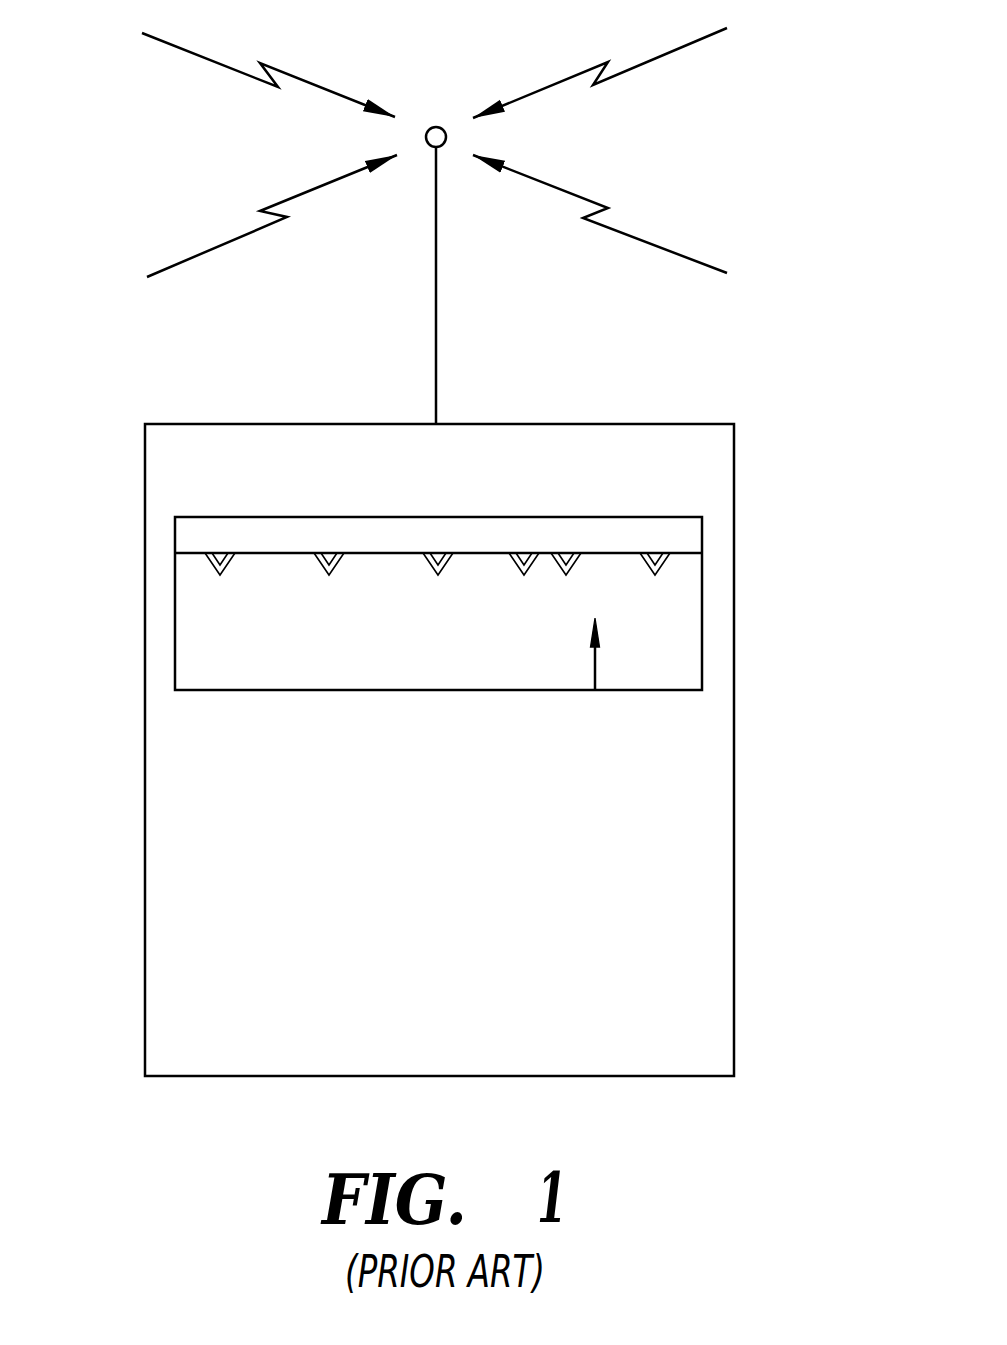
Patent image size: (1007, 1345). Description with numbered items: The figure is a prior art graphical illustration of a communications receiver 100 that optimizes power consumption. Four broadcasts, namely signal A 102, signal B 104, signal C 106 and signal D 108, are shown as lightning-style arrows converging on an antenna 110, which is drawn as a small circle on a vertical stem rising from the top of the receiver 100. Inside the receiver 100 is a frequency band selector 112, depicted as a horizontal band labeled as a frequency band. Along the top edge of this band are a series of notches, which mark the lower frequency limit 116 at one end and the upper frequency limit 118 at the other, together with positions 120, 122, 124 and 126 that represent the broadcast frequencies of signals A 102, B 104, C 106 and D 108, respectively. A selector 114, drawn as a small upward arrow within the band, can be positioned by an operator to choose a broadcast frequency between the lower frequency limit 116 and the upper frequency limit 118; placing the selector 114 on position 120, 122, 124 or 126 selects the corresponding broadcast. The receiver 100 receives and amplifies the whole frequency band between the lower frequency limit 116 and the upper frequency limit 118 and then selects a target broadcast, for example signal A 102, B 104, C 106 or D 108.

The communications receiver 100 is at (439, 750).
The signal A 102 is at (213, 63).
The signal B 104 is at (210, 250).
The signal C 106 is at (660, 58).
The signal D 108 is at (662, 247).
The antenna 110 is at (436, 302).
The frequency band selector 112 is at (672, 647).
The selector 114 is at (595, 665).
The lower frequency limit 116 is at (220, 553).
The upper frequency limit 118 is at (660, 550).
The position 120 is at (327, 553).
The position 122 is at (443, 553).
The position 124 is at (527, 553).
The position 126 is at (570, 553).